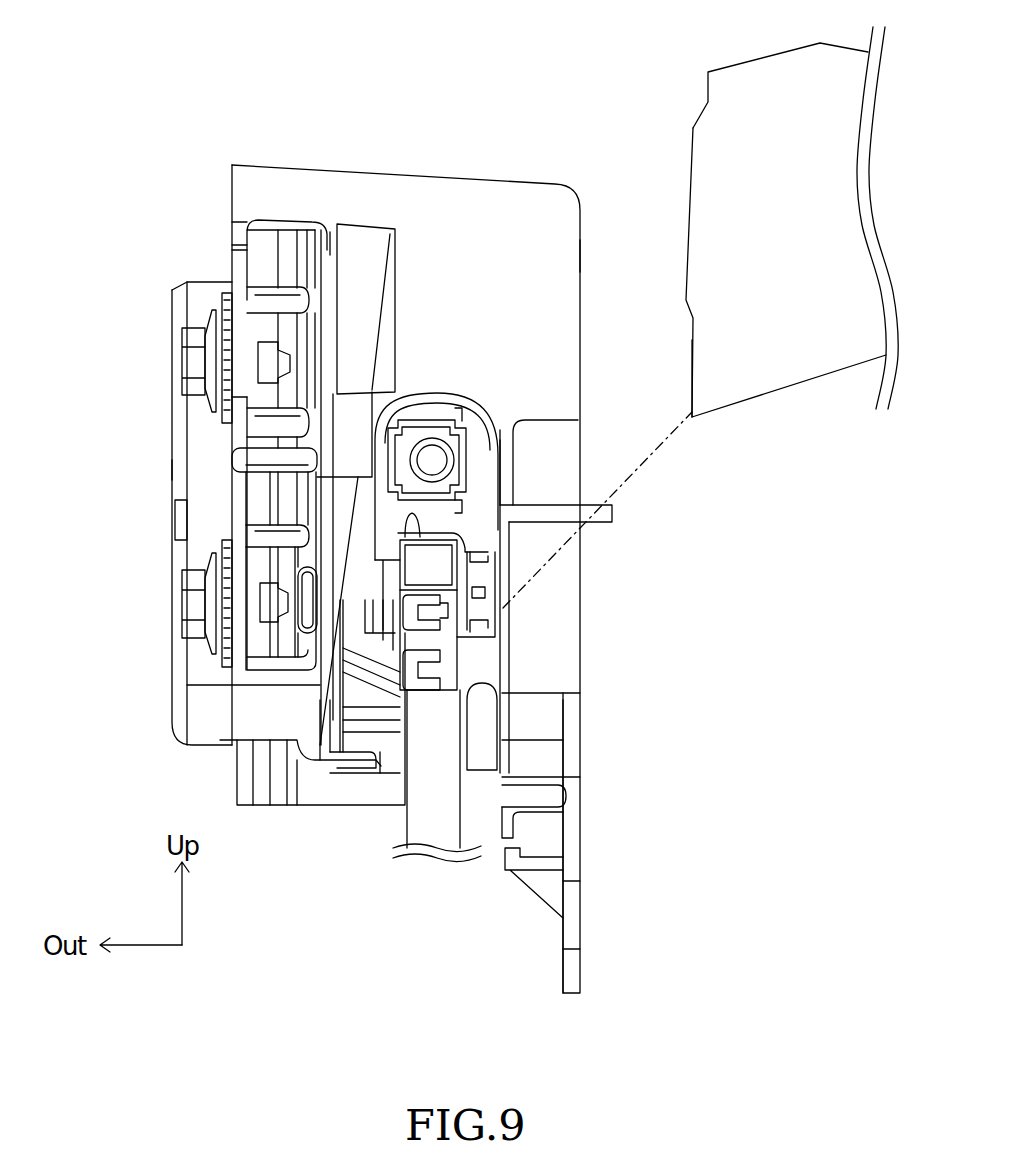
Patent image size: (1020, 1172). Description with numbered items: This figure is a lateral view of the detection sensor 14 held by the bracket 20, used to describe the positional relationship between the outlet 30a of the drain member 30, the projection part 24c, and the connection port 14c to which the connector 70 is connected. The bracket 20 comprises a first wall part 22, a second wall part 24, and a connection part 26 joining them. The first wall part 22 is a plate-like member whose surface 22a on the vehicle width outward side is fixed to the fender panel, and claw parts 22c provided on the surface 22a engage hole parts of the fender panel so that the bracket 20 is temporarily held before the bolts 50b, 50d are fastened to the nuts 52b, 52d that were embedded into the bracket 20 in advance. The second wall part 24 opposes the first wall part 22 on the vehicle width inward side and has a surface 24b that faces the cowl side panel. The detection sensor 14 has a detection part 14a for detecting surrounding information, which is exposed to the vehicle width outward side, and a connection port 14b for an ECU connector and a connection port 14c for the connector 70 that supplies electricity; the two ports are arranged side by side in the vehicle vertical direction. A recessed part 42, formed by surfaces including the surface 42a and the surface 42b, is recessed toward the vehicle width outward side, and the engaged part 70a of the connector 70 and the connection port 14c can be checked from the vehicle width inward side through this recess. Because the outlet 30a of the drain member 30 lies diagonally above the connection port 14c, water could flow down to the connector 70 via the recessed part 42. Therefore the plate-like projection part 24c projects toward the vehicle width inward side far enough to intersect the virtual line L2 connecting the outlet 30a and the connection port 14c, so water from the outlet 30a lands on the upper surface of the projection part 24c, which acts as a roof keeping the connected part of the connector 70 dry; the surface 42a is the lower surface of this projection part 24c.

The bracket 20 is at (320, 148).
The first wall part 22 is at (272, 182).
The surface 22a is at (238, 238).
The claw part 22c is at (183, 517).
The second wall part 24 is at (534, 203).
The surface 24b is at (585, 256).
The projection part 24c is at (567, 512).
The connection part 26 is at (414, 203).
The detection sensor 14 is at (172, 413).
The detection part 14a is at (172, 467).
The connection port 14b is at (455, 443).
The connection port 14c is at (447, 625).
The drain member 30 is at (780, 372).
The outlet 30a is at (694, 358).
The recessed part 42 is at (436, 511).
The surface 42a is at (557, 522).
The surface 42b is at (565, 645).
The bolt 50b is at (193, 357).
The bolt 50d is at (193, 603).
The nut 52b is at (238, 343).
The nut 52d is at (238, 623).
The connector 70 is at (420, 557).
The engaged part 70a is at (472, 592).
The virtual line L2 is at (645, 490).